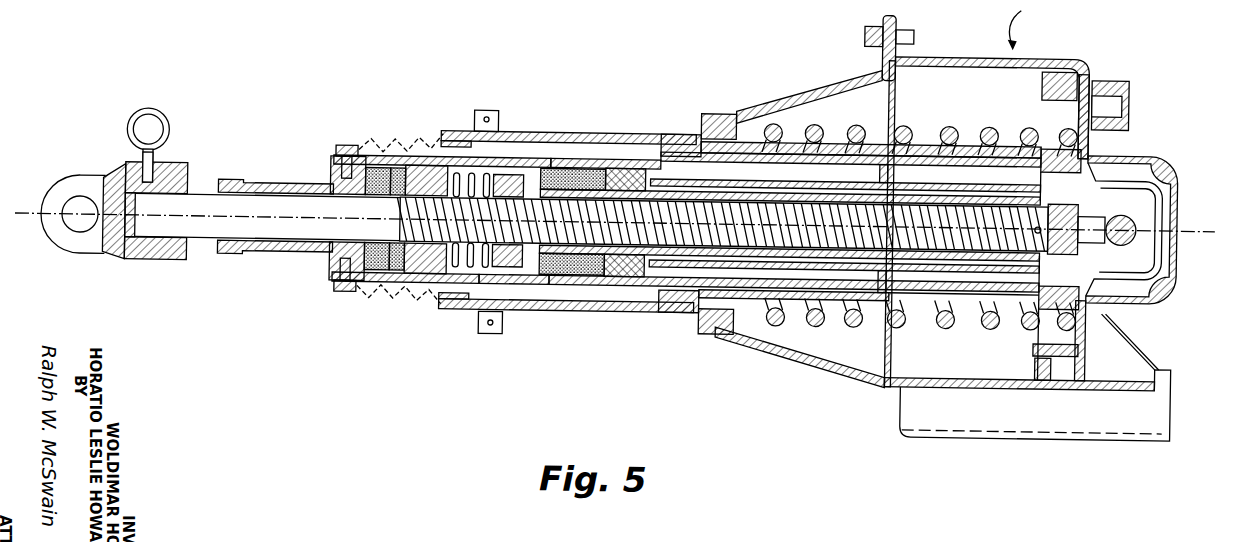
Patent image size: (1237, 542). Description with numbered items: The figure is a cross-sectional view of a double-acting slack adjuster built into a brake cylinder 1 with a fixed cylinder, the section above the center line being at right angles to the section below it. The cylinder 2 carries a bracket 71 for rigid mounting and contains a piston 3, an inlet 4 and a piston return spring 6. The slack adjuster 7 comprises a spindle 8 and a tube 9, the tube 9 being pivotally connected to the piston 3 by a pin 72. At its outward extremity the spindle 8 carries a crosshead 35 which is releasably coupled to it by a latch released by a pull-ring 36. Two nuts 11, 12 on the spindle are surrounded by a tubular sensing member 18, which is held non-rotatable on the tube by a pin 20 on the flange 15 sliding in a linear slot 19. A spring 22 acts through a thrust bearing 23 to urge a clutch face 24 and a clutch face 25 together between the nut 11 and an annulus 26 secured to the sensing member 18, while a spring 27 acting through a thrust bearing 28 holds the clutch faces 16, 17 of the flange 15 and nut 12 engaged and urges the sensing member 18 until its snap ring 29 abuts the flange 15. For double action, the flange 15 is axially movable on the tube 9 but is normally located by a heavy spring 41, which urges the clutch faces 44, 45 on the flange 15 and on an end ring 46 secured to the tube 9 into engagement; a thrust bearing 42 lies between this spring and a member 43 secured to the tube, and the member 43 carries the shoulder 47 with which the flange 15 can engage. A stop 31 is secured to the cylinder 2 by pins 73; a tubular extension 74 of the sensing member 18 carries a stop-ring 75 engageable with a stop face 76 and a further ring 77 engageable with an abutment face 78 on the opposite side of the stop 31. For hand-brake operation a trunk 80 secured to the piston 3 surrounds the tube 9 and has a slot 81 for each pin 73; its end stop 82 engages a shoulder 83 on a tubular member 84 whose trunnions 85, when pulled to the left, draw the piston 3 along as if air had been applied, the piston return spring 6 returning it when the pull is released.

The brake cylinder 1 is at (1031, 3).
The cylinder 2 is at (972, 43).
The piston 3 is at (1083, 75).
The inlet 4 is at (1128, 91).
The piston return spring 6 is at (765, 112).
The slack adjuster 7 is at (355, 137).
The spindle 8 is at (255, 185).
The tube 9 is at (683, 170).
The nut 11 is at (400, 268).
The nut 12 is at (516, 303).
The flange 15 is at (556, 236).
The clutch face 16 is at (505, 152).
The clutch face 17 is at (546, 148).
The tubular sensing member 18 is at (390, 141).
The linear slot 19 is at (606, 159).
The pin 20 is at (548, 162).
The spring 22 is at (360, 277).
The thrust bearing 23 is at (390, 265).
The clutch face 24 is at (407, 150).
The clutch face 25 is at (425, 268).
The annulus 26 is at (440, 160).
The spring 27 is at (456, 262).
The thrust bearing 28 is at (498, 103).
The snap ring 29 is at (665, 281).
The stop 31 is at (905, 118).
The crosshead 35 is at (66, 182).
The pull-ring 36 is at (168, 125).
The heavy spring 41 is at (560, 246).
The thrust bearing 42 is at (596, 267).
The member 43 is at (614, 268).
The clutch face 44 is at (570, 278).
The clutch face 45 is at (470, 278).
The end ring 46 is at (530, 278).
The shoulder 47 is at (660, 258).
The bracket 71 is at (1022, 404).
The pin 72 is at (1136, 203).
The pin 73 is at (883, 286).
The tubular extension 74 is at (748, 322).
The stop-ring 75 is at (1017, 165).
The stop face 76 is at (912, 298).
The further ring 77 is at (826, 126).
The abutment face 78 is at (852, 300).
The trunk 80 is at (778, 336).
The slot 81 is at (963, 296).
The end stop 82 is at (638, 130).
The shoulder 83 is at (656, 130).
The tubular member 84 is at (580, 148).
The trunnions 85 is at (480, 104).